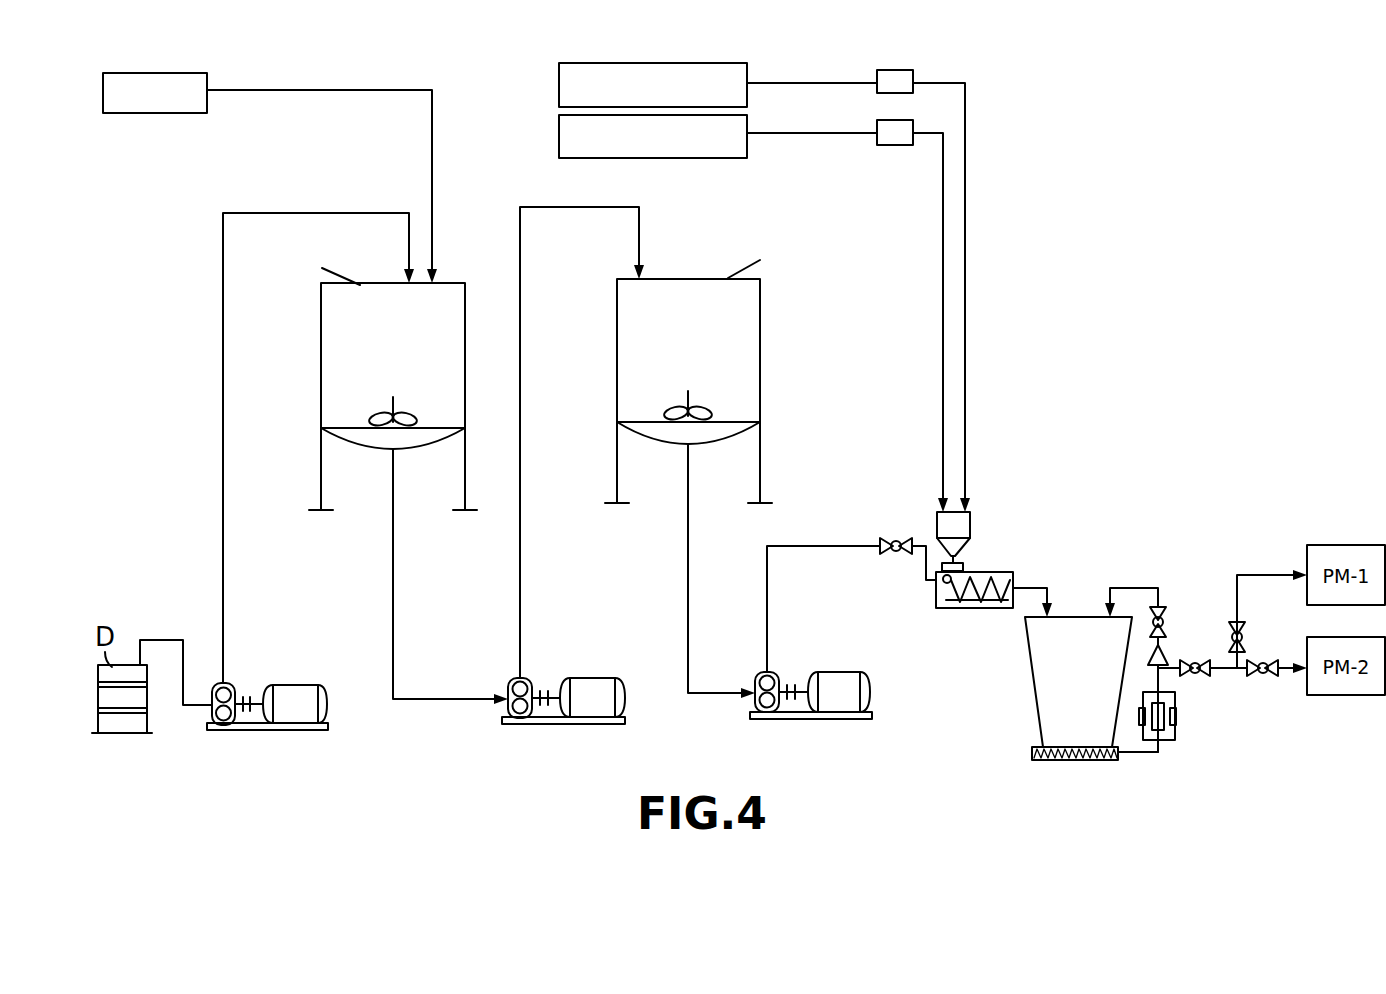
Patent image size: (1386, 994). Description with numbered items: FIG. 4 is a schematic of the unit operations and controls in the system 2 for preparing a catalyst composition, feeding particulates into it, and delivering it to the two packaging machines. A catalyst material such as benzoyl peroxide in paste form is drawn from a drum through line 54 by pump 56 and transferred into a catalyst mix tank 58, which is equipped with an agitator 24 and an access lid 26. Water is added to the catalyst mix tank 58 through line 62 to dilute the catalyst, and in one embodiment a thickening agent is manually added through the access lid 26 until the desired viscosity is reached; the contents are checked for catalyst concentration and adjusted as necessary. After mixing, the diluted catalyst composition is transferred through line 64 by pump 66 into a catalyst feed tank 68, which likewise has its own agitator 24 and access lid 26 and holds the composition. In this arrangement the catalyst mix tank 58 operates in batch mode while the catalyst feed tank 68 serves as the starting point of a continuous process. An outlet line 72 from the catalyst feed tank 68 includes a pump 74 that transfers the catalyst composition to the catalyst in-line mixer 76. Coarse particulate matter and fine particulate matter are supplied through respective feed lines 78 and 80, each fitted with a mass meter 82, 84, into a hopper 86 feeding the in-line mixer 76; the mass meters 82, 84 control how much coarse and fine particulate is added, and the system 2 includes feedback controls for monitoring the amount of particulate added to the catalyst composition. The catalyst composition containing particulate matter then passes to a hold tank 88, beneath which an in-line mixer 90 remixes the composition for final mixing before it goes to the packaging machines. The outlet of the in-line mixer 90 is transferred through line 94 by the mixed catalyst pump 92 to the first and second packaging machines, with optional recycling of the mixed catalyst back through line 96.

The system 2 is at (1218, 66).
The agitator 24 is at (378, 424).
The access lid 26 is at (358, 283).
The line 54 is at (225, 600).
The pump 56 is at (327, 695).
The catalyst mix tank 58 is at (321, 372).
The line 62 is at (268, 90).
The line 64 is at (522, 595).
The pump 66 is at (625, 690).
The catalyst feed tank 68 is at (760, 318).
The outlet line 72 is at (850, 546).
The pump 74 is at (870, 685).
The catalyst in-line mixer 76 is at (972, 608).
The feed line 78 is at (788, 133).
The feed line 80 is at (782, 83).
The mass meter 82 is at (900, 145).
The mass meter 84 is at (897, 70).
The hopper 86 is at (970, 525).
The hold tank 88 is at (1032, 680).
The in-line mixer 90 is at (1090, 762).
The mixed catalyst pump 92 is at (1178, 718).
The line 94 is at (1220, 669).
The line 96 is at (1132, 588).